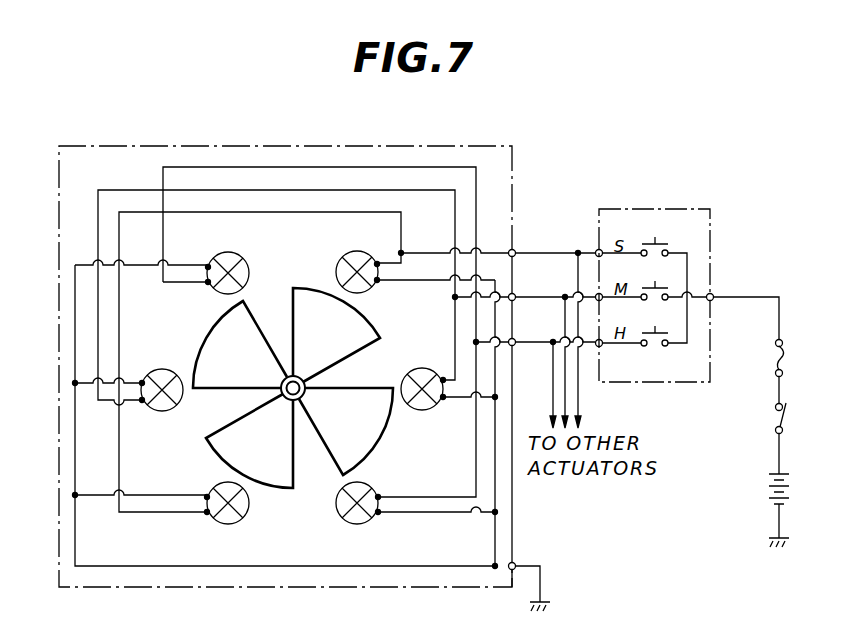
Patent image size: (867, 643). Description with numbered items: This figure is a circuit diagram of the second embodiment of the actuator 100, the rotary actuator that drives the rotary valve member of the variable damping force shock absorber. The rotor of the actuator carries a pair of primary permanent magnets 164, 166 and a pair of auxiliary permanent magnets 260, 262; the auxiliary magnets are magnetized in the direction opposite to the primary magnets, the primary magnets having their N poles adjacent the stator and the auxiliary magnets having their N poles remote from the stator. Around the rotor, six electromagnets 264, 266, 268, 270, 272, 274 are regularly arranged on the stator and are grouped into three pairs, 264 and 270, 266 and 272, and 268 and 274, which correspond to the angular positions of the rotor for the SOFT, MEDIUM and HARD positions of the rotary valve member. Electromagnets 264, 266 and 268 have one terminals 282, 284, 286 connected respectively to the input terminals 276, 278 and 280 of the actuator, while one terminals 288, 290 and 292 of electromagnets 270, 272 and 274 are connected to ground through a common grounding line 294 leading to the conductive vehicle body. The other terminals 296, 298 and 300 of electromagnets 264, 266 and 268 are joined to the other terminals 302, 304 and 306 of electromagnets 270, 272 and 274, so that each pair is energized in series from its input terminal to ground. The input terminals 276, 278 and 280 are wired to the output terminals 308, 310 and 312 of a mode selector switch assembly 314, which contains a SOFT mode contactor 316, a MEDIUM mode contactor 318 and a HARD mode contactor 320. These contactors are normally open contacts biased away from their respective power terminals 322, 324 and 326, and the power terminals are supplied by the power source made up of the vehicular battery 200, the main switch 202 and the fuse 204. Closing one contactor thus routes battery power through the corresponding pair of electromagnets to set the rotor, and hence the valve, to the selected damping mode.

The actuator 100 is at (512, 160).
The primary permanent magnet 164 is at (304, 300).
The primary permanent magnet 166 is at (214, 448).
The vehicular battery 200 is at (772, 482).
The main switch 202 is at (775, 417).
The fuse 204 is at (775, 359).
The auxiliary permanent magnet 260 is at (218, 350).
The auxiliary permanent magnet 262 is at (386, 432).
The electromagnet 264 is at (342, 260).
The electromagnet 266 is at (415, 375).
The electromagnet 268 is at (343, 513).
The electromagnet 270 is at (245, 517).
The electromagnet 272 is at (178, 396).
The electromagnet 274 is at (256, 245).
The input terminal 276 is at (515, 251).
The input terminal 278 is at (515, 295).
The input terminal 280 is at (515, 340).
The terminal of electromagnet 282 is at (377, 263).
The terminal of electromagnet 284 is at (444, 399).
The terminal of electromagnet 286 is at (379, 514).
The terminal of electromagnet 288 is at (206, 499).
The terminal of electromagnet 290 is at (141, 381).
The terminal of electromagnet 292 is at (208, 266).
The common grounding line 294 is at (78, 457).
The other terminal of electromagnet 296 is at (378, 282).
The other terminal of electromagnet 298 is at (443, 378).
The other terminal of electromagnet 300 is at (379, 496).
The other terminal of electromagnet 302 is at (206, 514).
The other terminal of electromagnet 304 is at (142, 402).
The other terminal of electromagnet 306 is at (208, 284).
The output terminal 308 is at (597, 250).
The output terminal 310 is at (610, 270).
The output terminal 312 is at (601, 346).
The mode selector switch assembly 314 is at (710, 209).
The SOFT mode contactor 316 is at (656, 236).
The MEDIUM mode contactor 318 is at (666, 287).
The HARD mode contactor 320 is at (666, 330).
The power terminal 322 is at (668, 251).
The power terminal 324 is at (713, 295).
The power terminal 326 is at (668, 346).